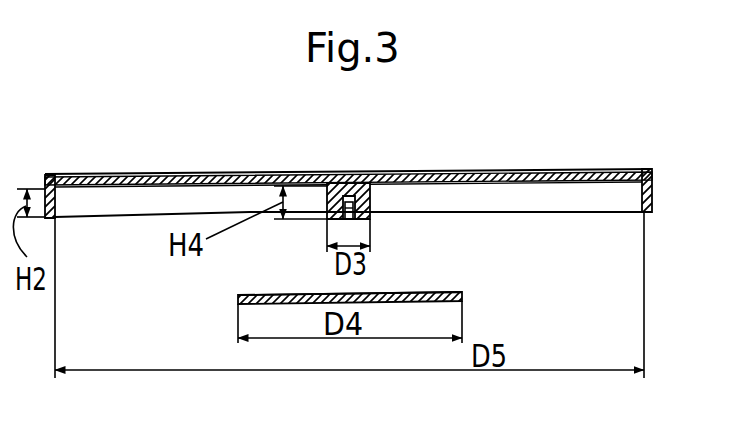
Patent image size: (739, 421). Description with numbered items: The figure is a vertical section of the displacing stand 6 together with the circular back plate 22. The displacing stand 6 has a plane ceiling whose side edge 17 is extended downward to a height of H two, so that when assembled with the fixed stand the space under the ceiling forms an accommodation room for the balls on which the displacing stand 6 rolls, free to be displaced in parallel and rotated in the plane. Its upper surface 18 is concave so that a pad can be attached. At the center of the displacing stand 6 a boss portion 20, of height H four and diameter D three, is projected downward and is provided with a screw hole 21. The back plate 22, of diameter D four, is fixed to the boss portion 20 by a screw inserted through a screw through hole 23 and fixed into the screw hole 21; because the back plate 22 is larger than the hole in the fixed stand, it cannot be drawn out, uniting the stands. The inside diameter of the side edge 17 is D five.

The displacing stand 6 is at (500, 146).
The side edge 17 is at (653, 171).
The upper surface 18 is at (125, 176).
The boss portion 20 is at (399, 176).
The screw hole 21 is at (350, 217).
The back plate 22 is at (428, 294).
The screw through hole 23 is at (356, 294).